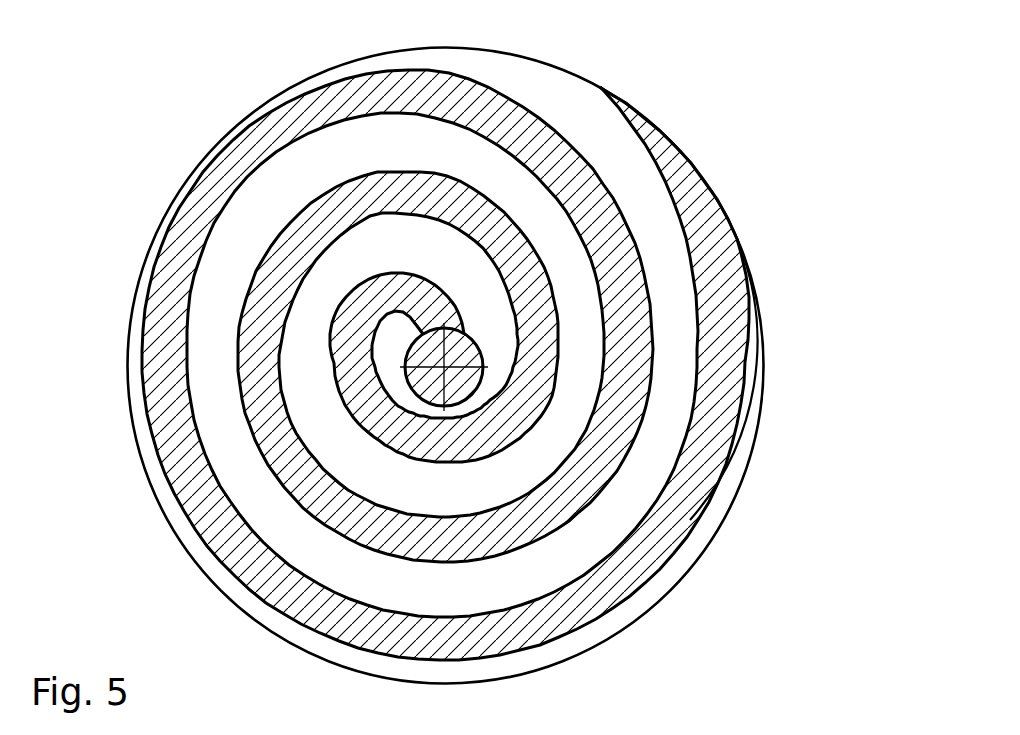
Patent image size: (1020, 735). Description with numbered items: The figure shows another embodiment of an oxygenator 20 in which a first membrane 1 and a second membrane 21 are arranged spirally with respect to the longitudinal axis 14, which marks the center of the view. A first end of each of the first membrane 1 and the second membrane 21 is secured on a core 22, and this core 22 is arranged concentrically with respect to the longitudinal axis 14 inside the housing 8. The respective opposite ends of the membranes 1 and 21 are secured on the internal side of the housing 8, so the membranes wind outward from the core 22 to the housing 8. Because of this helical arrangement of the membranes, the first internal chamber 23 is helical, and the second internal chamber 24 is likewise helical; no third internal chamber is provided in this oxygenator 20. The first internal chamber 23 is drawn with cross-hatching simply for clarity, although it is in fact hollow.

The first membrane 1 is at (463, 366).
The housing 8 is at (783, 363).
The longitudinal axis 14 is at (647, 367).
The oxygenator 20 is at (722, 168).
The second membrane 21 is at (254, 293).
The core 22 is at (615, 312).
The first internal chamber 23 is at (747, 249).
The second internal chamber 24 is at (512, 366).